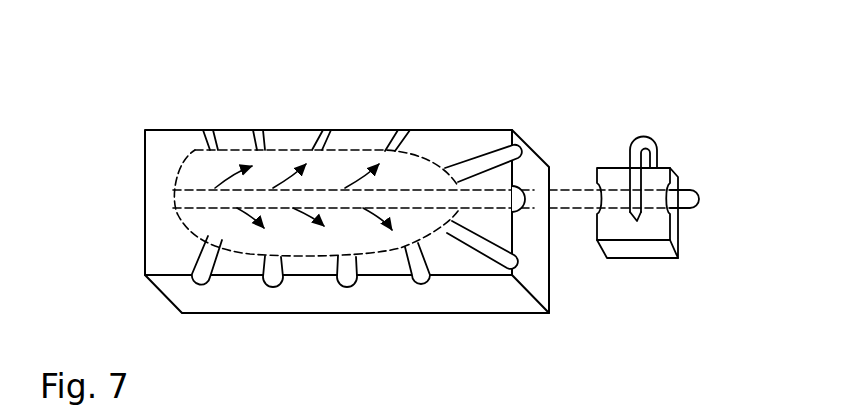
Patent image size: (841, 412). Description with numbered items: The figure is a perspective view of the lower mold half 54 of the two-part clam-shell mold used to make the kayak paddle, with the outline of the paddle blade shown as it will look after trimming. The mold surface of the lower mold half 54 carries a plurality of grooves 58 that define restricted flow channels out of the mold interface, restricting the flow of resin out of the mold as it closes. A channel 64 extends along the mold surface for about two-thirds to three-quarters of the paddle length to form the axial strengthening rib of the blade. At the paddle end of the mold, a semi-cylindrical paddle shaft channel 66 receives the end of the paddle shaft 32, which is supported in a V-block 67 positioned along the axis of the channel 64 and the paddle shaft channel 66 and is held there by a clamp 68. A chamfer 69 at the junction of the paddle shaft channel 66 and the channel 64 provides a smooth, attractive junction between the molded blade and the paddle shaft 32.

The paddle shaft 32 is at (563, 209).
The lower mold half 54 is at (347, 129).
The grooves 58 is at (203, 137).
The channel 64 is at (277, 208).
The paddle shaft channel 66 is at (525, 189).
The V-block 67 is at (643, 250).
The clamp 68 is at (630, 144).
The chamfer 69 is at (458, 215).